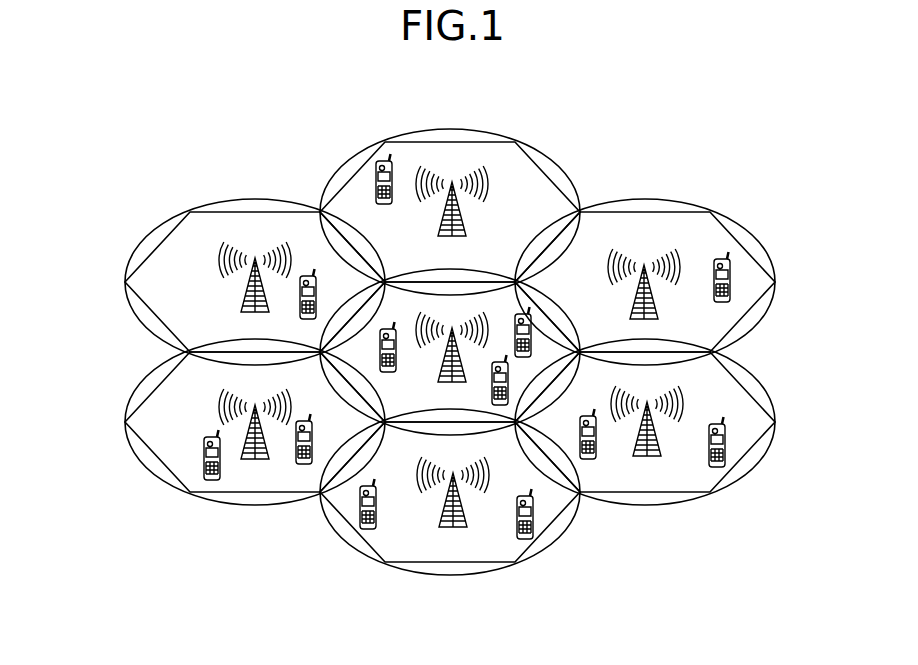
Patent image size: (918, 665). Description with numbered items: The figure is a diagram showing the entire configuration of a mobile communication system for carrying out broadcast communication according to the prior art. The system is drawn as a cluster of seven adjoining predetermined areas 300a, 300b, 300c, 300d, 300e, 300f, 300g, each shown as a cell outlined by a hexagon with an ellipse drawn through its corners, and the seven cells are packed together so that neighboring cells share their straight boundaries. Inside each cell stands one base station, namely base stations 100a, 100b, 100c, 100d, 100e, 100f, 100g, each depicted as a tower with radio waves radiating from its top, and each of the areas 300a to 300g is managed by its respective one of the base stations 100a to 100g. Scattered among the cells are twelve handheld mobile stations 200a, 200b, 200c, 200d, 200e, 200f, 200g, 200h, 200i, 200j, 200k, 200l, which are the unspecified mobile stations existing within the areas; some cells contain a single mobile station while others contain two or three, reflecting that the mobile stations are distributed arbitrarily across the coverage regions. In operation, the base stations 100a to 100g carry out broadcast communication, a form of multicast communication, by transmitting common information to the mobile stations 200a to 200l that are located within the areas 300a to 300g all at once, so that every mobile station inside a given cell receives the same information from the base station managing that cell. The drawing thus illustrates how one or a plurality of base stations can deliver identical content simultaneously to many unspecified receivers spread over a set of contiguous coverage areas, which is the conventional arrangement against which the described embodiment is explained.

The base station 100a is at (452, 181).
The base station 100b is at (254, 257).
The base station 100c is at (644, 265).
The base station 100d is at (440, 367).
The base station 100e is at (257, 458).
The base station 100f is at (660, 452).
The base station 100g is at (467, 512).
The mobile station 200a is at (379, 159).
The mobile station 200b is at (306, 275).
The mobile station 200c is at (388, 373).
The mobile station 200d is at (533, 338).
The mobile station 200e is at (499, 362).
The mobile station 200f is at (720, 258).
The mobile station 200g is at (213, 481).
The mobile station 200h is at (305, 464).
The mobile station 200i is at (368, 530).
The mobile station 200j is at (533, 520).
The mobile station 200k is at (597, 438).
The mobile station 200l is at (726, 447).
The area 300a is at (353, 156).
The area 300b is at (124, 270).
The area 300c is at (776, 282).
The area 300d is at (470, 423).
The area 300e is at (150, 473).
The area 300f is at (776, 423).
The area 300g is at (577, 518).